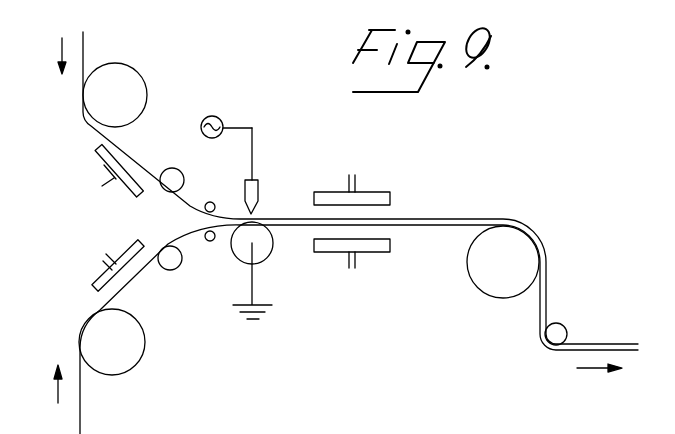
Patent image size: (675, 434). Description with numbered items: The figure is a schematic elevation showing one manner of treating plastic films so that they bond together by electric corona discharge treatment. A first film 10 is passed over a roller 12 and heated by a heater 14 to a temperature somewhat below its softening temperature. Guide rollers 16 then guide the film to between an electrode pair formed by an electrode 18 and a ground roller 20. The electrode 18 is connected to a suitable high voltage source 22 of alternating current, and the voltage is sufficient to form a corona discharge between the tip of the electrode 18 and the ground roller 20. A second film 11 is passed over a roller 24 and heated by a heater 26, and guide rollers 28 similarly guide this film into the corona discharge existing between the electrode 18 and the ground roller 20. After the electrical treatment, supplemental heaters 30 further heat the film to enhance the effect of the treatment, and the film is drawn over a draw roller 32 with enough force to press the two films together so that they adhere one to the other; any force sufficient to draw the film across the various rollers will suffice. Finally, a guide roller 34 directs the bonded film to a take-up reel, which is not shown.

The first film 10 is at (83, 43).
The second film 11 is at (80, 418).
The roller 12 is at (140, 70).
The heater 14 is at (108, 168).
The guide rollers 16 is at (208, 202).
The electrode 18 is at (261, 190).
The ground roller 20 is at (270, 257).
The high voltage source 22 is at (218, 118).
The roller 24 is at (143, 357).
The heater 26 is at (100, 273).
The guide rollers 28 is at (210, 241).
The supplemental heaters 30 is at (380, 192).
The draw roller 32 is at (493, 300).
The guide roller 34 is at (567, 330).